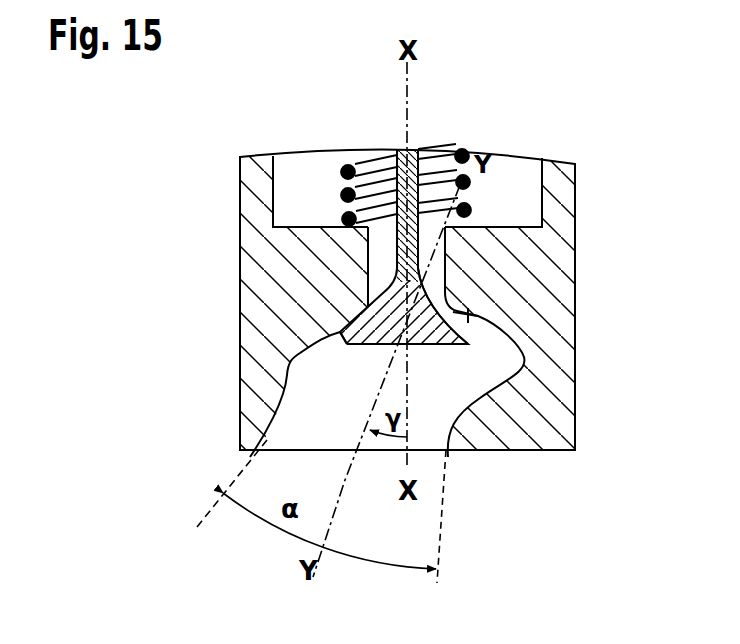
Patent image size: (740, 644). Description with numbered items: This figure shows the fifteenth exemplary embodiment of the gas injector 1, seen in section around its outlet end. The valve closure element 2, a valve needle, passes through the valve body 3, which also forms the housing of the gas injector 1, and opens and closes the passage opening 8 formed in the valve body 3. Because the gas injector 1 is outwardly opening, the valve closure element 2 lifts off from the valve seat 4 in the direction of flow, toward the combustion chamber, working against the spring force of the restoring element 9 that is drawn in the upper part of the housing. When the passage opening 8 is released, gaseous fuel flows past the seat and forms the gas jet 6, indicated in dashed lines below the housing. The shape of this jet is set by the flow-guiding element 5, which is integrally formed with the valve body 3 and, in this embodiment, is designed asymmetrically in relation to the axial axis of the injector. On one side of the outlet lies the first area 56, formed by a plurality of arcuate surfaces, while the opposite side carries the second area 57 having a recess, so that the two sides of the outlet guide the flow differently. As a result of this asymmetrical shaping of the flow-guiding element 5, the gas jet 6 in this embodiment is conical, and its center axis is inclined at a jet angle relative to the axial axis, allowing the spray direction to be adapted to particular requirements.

The gas injector 1 is at (297, 97).
The valve closure element 2 is at (412, 147).
The valve body 3 is at (262, 221).
The valve seat 4 is at (468, 320).
The flow-guiding element 5 is at (330, 344).
The gas jet 6 is at (218, 500).
The passage opening 8 is at (426, 277).
The restoring element 9 is at (341, 171).
The first area 56 is at (296, 362).
The second area 57 is at (522, 359).